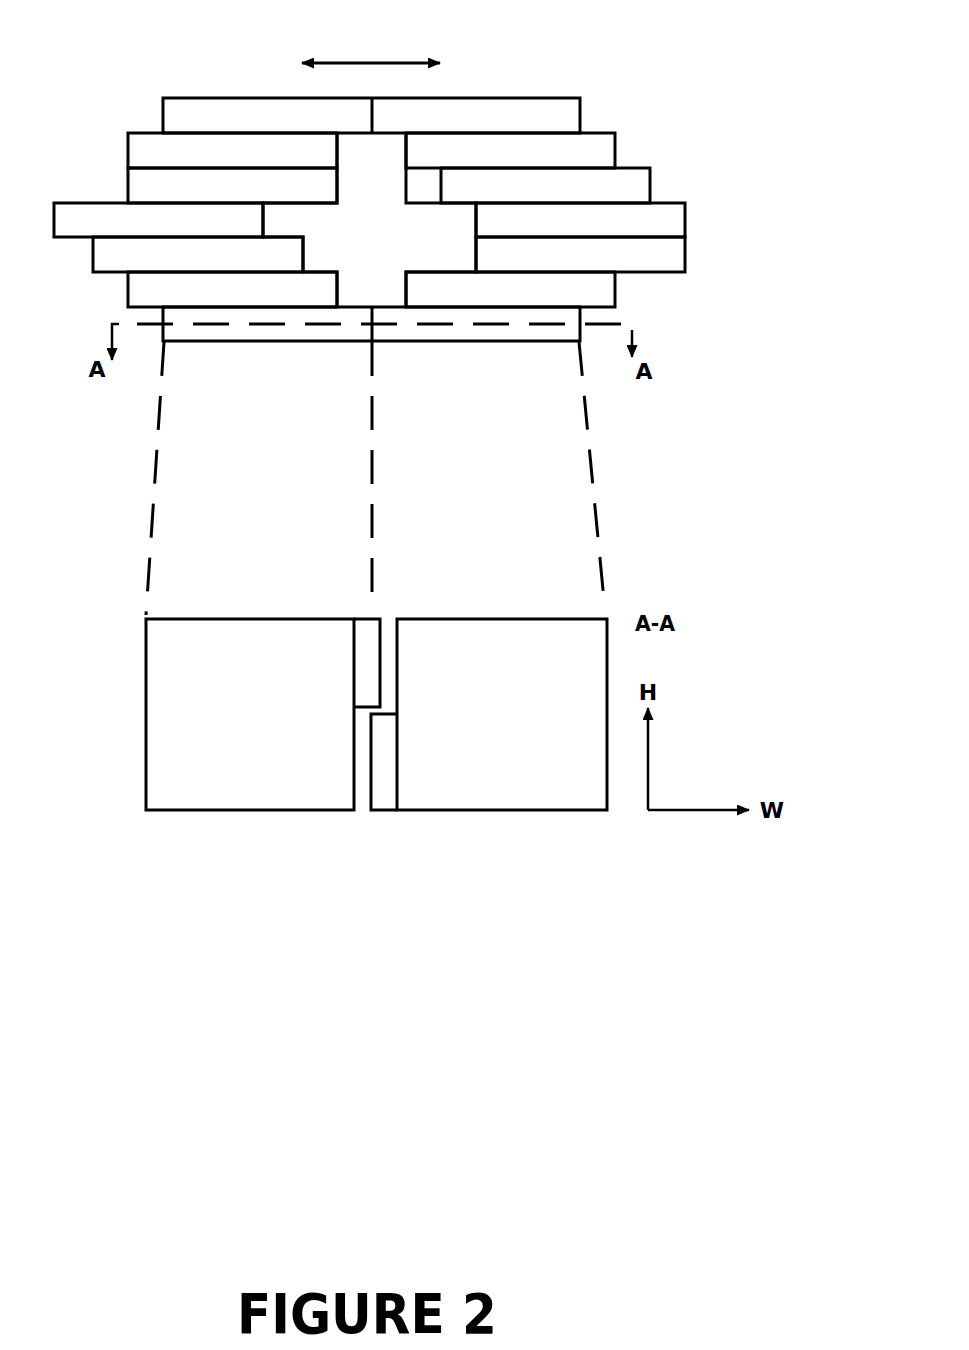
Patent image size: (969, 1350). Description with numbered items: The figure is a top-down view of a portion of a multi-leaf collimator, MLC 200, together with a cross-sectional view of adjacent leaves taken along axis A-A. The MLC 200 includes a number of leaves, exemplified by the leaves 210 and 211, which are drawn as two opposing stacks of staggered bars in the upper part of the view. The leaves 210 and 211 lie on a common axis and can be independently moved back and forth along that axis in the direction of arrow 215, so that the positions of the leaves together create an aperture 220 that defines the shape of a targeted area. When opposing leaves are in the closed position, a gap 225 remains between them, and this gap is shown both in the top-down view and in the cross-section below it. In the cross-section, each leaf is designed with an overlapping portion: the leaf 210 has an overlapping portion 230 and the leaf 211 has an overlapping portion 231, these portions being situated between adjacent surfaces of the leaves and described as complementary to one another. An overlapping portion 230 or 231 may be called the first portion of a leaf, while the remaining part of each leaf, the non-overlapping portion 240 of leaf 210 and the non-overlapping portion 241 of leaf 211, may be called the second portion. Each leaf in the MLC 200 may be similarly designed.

The multi-leaf collimator 200 is at (146, 28).
The leaf 210 is at (268, 350).
The leaf 211 is at (475, 352).
The arrow 215 is at (372, 60).
The aperture 220 is at (360, 243).
The gap 225 is at (373, 343).
The overlapping portion 230 is at (368, 635).
The overlapping portion 231 is at (378, 795).
The non-overlapping portion 240 is at (230, 728).
The non-overlapping portion 241 is at (482, 726).